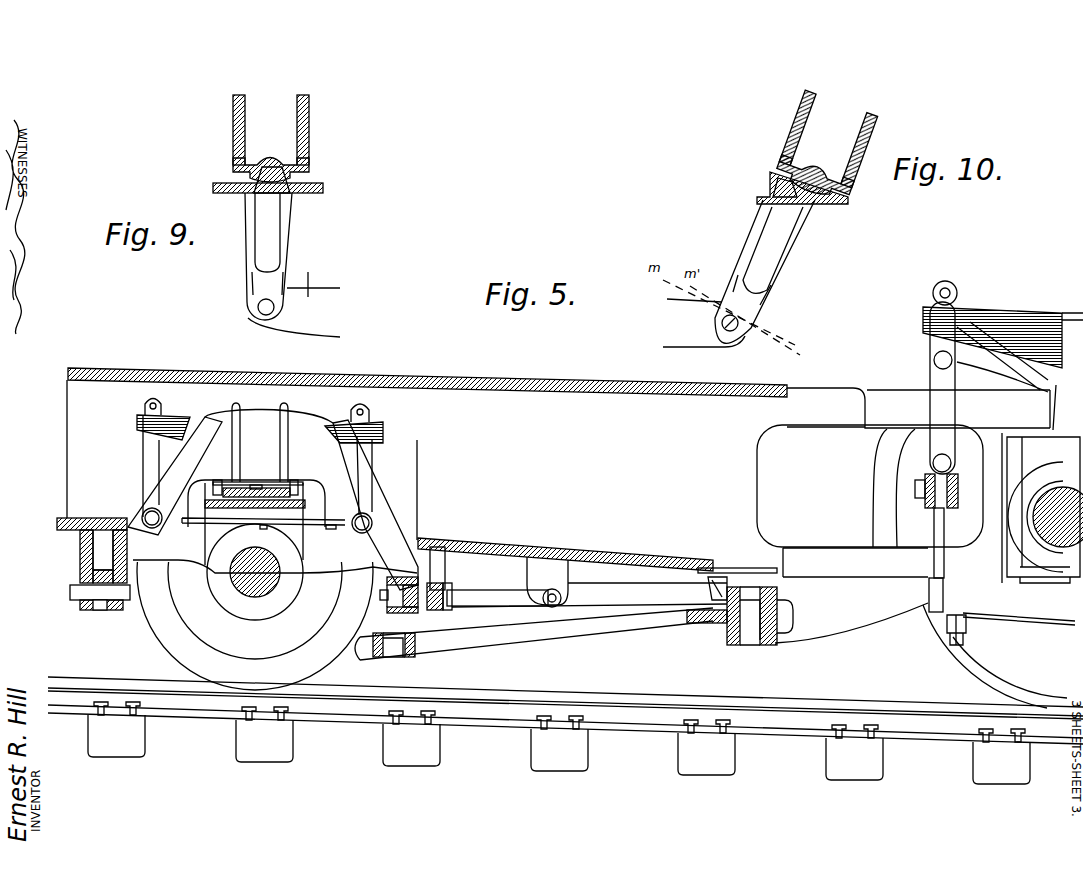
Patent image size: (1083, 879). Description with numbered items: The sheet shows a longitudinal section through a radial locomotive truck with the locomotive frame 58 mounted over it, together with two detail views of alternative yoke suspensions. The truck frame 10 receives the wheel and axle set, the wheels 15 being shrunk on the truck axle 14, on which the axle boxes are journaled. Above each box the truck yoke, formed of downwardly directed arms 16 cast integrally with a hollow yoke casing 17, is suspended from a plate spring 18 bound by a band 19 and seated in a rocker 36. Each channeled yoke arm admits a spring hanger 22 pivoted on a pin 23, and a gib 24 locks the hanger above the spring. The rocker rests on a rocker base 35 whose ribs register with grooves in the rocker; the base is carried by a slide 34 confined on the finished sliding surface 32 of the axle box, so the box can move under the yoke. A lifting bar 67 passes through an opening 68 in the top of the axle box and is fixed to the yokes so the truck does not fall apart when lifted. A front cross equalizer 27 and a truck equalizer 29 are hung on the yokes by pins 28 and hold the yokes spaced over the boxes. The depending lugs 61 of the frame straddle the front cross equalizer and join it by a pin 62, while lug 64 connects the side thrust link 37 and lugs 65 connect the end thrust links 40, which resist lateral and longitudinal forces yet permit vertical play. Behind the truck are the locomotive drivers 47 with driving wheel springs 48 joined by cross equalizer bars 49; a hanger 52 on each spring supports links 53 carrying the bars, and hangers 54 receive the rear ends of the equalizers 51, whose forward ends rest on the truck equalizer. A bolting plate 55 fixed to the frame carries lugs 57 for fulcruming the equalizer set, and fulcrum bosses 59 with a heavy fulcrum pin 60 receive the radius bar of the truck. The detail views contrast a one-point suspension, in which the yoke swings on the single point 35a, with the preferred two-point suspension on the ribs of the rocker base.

In FIG. 5, the truck frame 10 is at (386, 652).
In FIG. 5, the truck axle 14 is at (257, 560).
In FIG. 5, the wheels 15 is at (150, 640).
In FIG. 9, the arms 16 is at (283, 247).
In FIG. 10, the arms 16 is at (775, 268).
In FIG. 5, the arms 16 is at (136, 508).
In FIG. 10, the yoke casing 17 is at (828, 139).
In FIG. 5, the yoke casing 17 is at (268, 425).
In FIG. 5, the plate spring 18 is at (338, 428).
In FIG. 5, the band 19 is at (533, 643).
In FIG. 5, the spring hanger 22 is at (142, 446).
In FIG. 5, the pin 23 is at (152, 528).
In FIG. 5, the gib 24 is at (163, 407).
In FIG. 10, the front cross equalizer 27 is at (665, 299).
In FIG. 5, the front cross equalizer 27 is at (72, 577).
In FIG. 9, the pins 28 is at (313, 280).
In FIG. 5, the truck equalizer 29 is at (411, 604).
In FIG. 5, the sliding surface 32 is at (309, 496).
In FIG. 5, the slide 34 is at (218, 482).
In FIG. 9, the rocker base 35 is at (300, 181).
In FIG. 10, the rocker base 35 is at (767, 193).
In FIG. 5, the rocker base 35 is at (288, 487).
In FIG. 10, the point 35a is at (813, 179).
In FIG. 5, the rocker 36 is at (255, 485).
In FIG. 5, the side thrust link 37 is at (455, 607).
In FIG. 5, the end thrust links 40 is at (490, 599).
In FIG. 5, the locomotive drivers 47 is at (876, 493).
In FIG. 5, the driving wheel springs 48 is at (1020, 323).
In FIG. 5, the cross equalizer bars 49 is at (936, 504).
In FIG. 5, the equalizers to the driving wheels 51 is at (390, 608).
In FIG. 5, the hanger 52 is at (931, 340).
In FIG. 5, the links 53 is at (932, 405).
In FIG. 5, the hangers 54 is at (944, 562).
In FIG. 5, the bolting plate 55 is at (738, 568).
In FIG. 5, the lugs 57 is at (708, 597).
In FIG. 5, the locomotive frame 58 is at (644, 384).
In FIG. 5, the fulcrum bosses 59 is at (794, 612).
In FIG. 5, the fulcrum pin 60 is at (745, 645).
In FIG. 5, the lugs 61 is at (82, 553).
In FIG. 5, the pin 62 is at (95, 611).
In FIG. 5, the lug 64 is at (447, 568).
In FIG. 5, the lugs 65 is at (568, 573).
In FIG. 5, the lifting bar 67 is at (200, 526).
In FIG. 5, the opening 68 is at (314, 528).